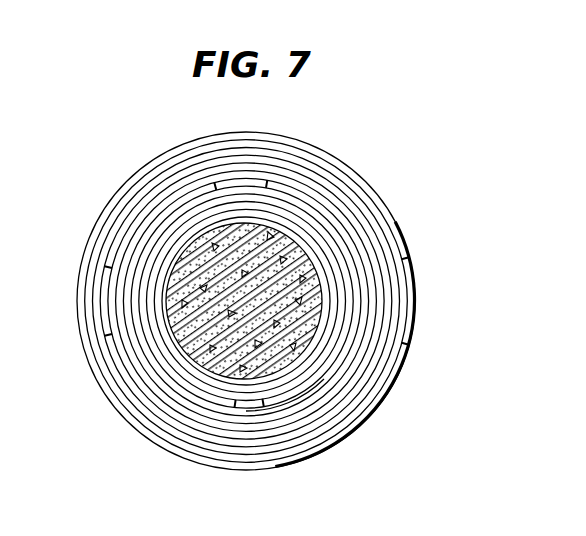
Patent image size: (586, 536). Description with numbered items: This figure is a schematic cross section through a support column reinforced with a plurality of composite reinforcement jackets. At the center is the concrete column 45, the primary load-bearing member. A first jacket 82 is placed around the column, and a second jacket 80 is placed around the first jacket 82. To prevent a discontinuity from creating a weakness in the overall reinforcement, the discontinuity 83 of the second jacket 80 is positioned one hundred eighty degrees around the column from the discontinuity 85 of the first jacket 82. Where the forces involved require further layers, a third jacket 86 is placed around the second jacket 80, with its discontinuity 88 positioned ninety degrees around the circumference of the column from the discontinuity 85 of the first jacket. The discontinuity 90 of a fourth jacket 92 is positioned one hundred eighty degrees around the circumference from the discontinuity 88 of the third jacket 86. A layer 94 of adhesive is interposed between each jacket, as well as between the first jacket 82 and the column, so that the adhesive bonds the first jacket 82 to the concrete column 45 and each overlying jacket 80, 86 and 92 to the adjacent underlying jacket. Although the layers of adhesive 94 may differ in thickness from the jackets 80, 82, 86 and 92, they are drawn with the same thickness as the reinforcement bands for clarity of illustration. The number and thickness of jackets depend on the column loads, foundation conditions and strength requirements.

The concrete column 45 is at (293, 243).
The second jacket 80 is at (160, 220).
The first jacket 82 is at (160, 258).
The discontinuity of the second jacket 83 is at (225, 182).
The discontinuity of the first jacket 85 is at (253, 400).
The third jacket 86 is at (127, 382).
The discontinuity of the third jacket 88 is at (105, 302).
The discontinuity of the fourth jacket 90 is at (412, 298).
The fourth jacket 92 is at (385, 220).
The layer of adhesive 94 is at (324, 379).